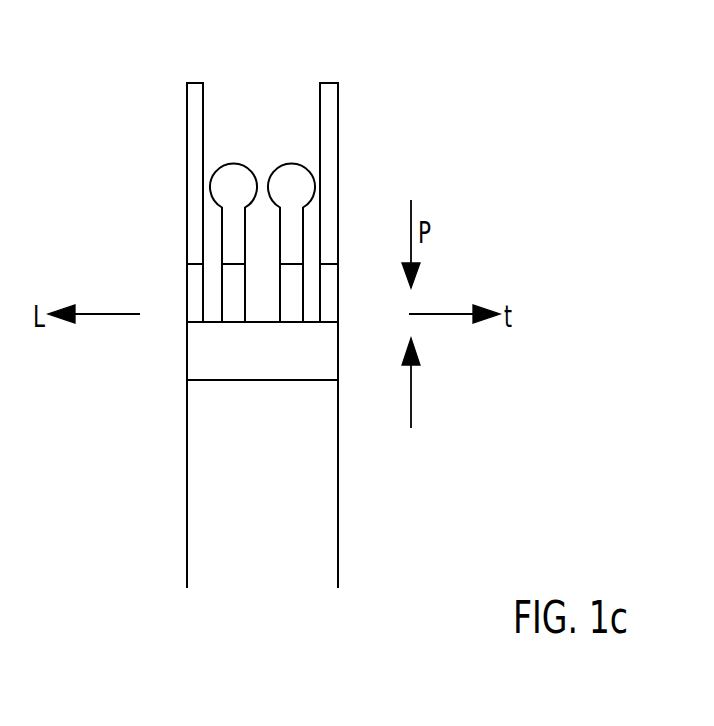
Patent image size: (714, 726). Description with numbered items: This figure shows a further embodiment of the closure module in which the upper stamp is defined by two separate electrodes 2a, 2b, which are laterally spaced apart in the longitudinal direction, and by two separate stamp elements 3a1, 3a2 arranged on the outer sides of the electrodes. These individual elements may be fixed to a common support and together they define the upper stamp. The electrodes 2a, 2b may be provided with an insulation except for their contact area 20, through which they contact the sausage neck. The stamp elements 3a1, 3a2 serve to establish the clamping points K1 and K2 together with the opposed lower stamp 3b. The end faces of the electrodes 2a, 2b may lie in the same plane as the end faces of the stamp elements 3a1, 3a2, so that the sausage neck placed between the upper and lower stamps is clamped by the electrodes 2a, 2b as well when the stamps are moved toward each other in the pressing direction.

The stamp element 3a1 is at (198, 90).
The stamp element 3a2 is at (332, 90).
The electrode 2a is at (232, 172).
The electrode 2b is at (291, 172).
The contact area 20 is at (238, 322).
The lower stamp 3b is at (322, 530).
The clamping point K1 is at (187, 322).
The clamping point K2 is at (338, 322).